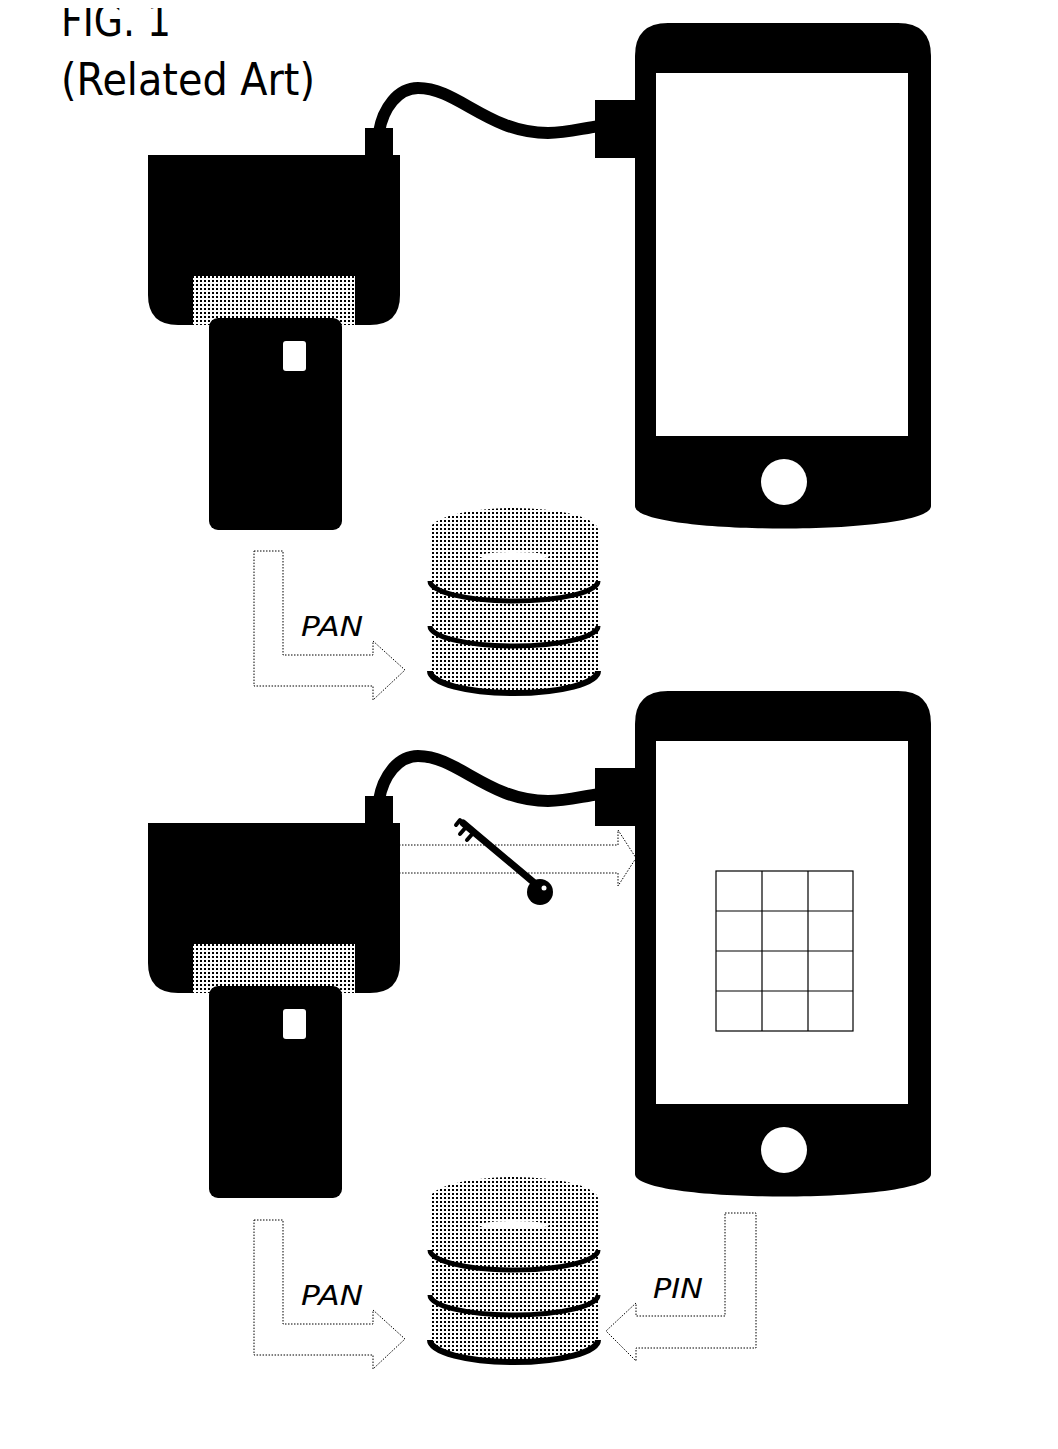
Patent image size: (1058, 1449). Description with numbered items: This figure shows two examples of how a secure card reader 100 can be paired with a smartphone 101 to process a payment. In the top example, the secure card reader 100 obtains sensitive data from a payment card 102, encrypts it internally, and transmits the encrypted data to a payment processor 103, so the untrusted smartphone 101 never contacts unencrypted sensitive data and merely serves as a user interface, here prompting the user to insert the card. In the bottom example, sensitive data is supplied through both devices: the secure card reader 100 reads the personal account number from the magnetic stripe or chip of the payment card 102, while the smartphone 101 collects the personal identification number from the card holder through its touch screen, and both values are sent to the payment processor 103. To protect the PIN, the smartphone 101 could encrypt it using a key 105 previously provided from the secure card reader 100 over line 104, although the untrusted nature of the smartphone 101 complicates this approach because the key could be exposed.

The secure card reader 100 is at (140, 250).
The smartphone 101 is at (627, 258).
The payment card 102 is at (200, 483).
The payment processor 103 is at (533, 543).
The line 104 is at (510, 785).
The key 105 is at (523, 897).